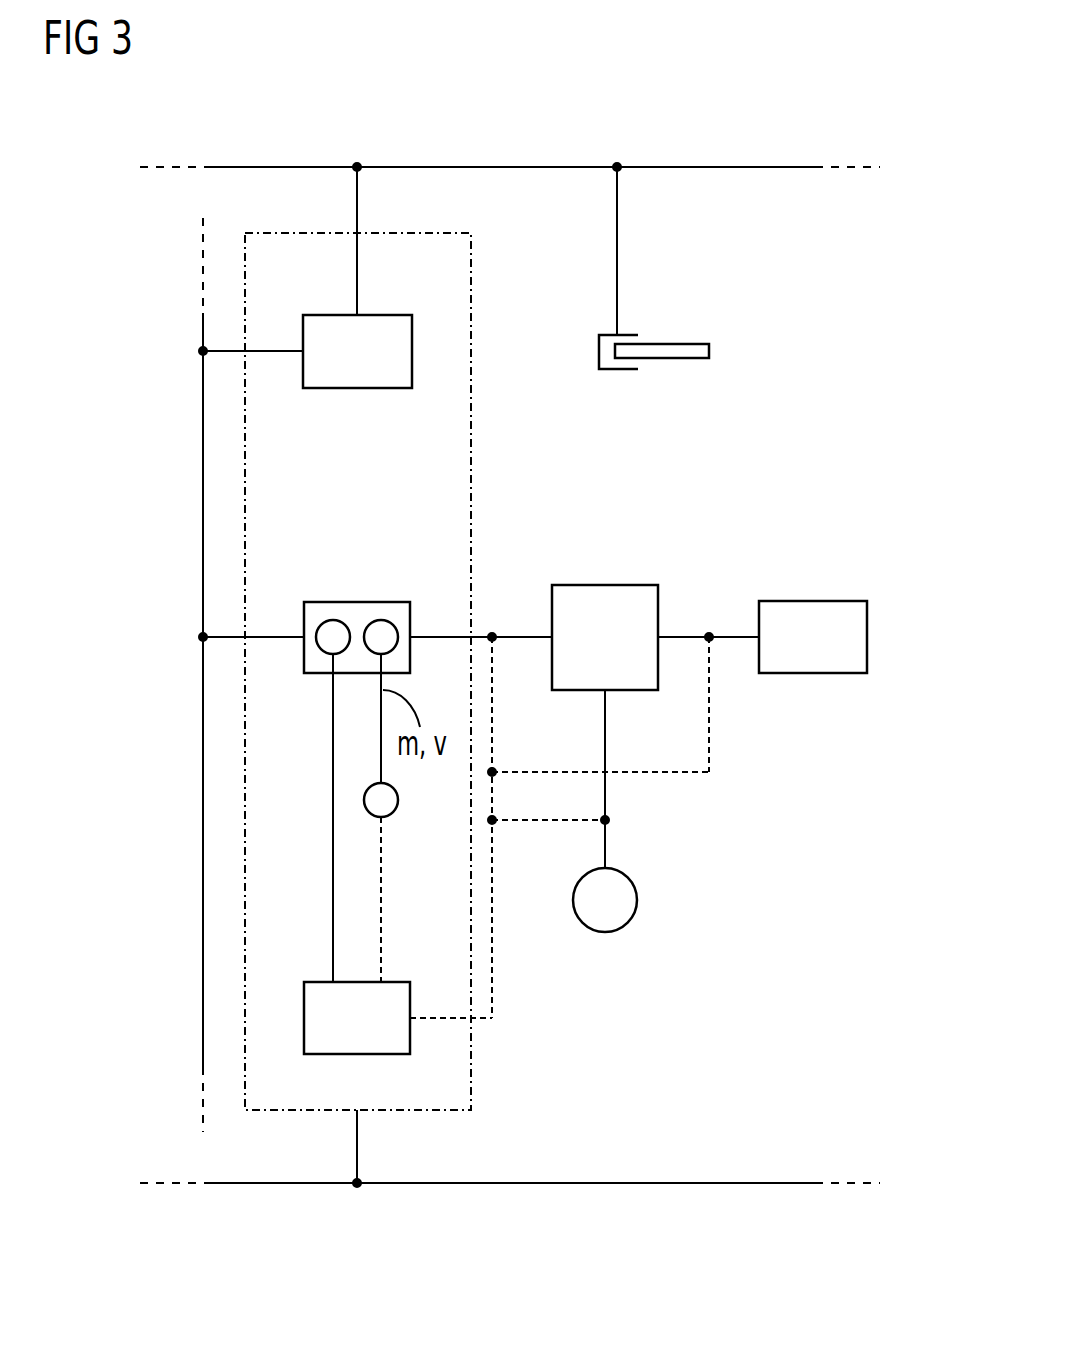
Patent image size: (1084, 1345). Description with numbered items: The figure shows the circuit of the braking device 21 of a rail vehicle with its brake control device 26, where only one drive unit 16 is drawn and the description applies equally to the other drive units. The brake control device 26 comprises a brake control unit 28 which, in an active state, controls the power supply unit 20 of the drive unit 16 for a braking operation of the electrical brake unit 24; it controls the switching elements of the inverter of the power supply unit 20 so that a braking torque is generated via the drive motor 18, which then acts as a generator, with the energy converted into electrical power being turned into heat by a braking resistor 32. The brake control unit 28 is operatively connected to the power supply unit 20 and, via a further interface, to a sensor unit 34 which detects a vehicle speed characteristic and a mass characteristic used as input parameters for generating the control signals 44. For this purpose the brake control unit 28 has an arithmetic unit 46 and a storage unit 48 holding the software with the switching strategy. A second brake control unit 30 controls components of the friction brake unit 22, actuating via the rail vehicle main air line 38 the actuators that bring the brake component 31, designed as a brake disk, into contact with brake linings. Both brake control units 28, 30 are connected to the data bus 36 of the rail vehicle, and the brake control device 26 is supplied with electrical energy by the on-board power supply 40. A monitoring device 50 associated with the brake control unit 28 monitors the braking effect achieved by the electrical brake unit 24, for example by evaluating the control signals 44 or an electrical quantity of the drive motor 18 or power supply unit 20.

The drive unit 16 is at (756, 820).
The drive motor 18 is at (607, 935).
The power supply unit 20 is at (596, 585).
The braking device 21 is at (906, 334).
The friction brake unit 22 is at (684, 312).
The electrical brake unit 24 is at (690, 546).
The brake control device 26 is at (471, 291).
The brake control unit 28 is at (316, 675).
The brake control unit 30 is at (357, 390).
The brake component 31 is at (709, 348).
The braking resistor 32 is at (867, 637).
The sensor unit 34 is at (398, 804).
The data bus 36 is at (203, 818).
The rail vehicle main air line 38 is at (553, 165).
The on-board power supply 40 is at (578, 1185).
The control signals 44 is at (521, 635).
The arithmetic unit 46 is at (333, 620).
The storage unit 48 is at (381, 620).
The monitoring device 50 is at (316, 982).